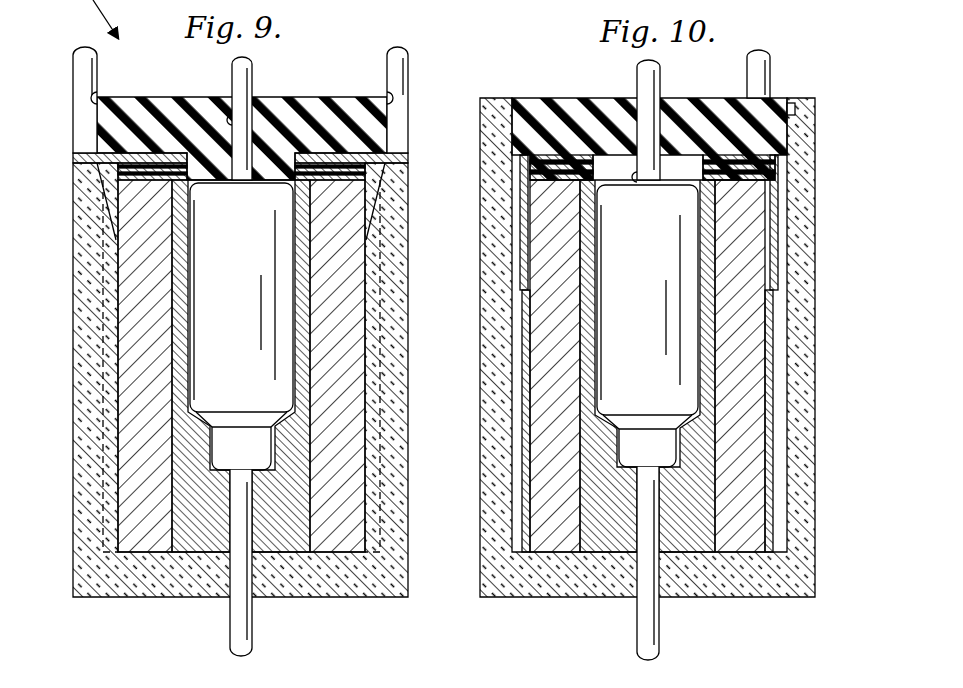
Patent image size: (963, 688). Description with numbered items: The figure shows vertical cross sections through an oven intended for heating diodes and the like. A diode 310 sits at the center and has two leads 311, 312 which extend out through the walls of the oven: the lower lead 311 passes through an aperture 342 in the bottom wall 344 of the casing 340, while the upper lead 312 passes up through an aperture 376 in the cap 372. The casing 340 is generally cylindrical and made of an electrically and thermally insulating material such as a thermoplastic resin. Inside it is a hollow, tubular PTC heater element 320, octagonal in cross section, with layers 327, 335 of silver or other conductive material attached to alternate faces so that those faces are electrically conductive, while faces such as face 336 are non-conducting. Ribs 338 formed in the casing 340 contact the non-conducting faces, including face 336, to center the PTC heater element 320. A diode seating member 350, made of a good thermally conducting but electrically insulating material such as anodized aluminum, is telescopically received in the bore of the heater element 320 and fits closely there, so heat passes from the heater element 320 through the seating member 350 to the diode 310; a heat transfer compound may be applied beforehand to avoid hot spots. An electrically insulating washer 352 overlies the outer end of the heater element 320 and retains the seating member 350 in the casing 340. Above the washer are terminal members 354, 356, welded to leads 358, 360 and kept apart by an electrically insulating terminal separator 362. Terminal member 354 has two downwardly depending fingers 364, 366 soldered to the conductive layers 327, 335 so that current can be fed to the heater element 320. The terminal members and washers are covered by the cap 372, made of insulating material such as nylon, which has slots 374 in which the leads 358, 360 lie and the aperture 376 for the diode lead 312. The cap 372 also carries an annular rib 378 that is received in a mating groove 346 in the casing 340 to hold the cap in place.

In FIG. 9, the diode 310 is at (258, 258).
In FIG. 10, the diode 310 is at (666, 259).
In FIG. 9, the lead 311 is at (252, 650).
In FIG. 10, the lead 311 is at (660, 640).
In FIG. 9, the lead 312 is at (252, 62).
In FIG. 10, the lead 312 is at (660, 68).
In FIG. 9, the PTC heater element 320 is at (160, 514).
In FIG. 10, the PTC heater element 320 is at (575, 514).
In FIG. 10, the layer 327 is at (525, 378).
In FIG. 10, the layer 335 is at (767, 377).
In FIG. 9, the rectangular face 336 is at (521, 7).
In FIG. 9, the ribs 338 is at (120, 318).
In FIG. 9, the casing 340 is at (85, 481).
In FIG. 10, the casing 340 is at (488, 479).
In FIG. 9, the aperture 342 is at (236, 598).
In FIG. 10, the aperture 342 is at (641, 598).
In FIG. 9, the bottom wall 344 is at (318, 596).
In FIG. 10, the bottom wall 344 is at (752, 596).
In FIG. 10, the groove 346 is at (790, 105).
In FIG. 9, the diode seating member 350 is at (305, 514).
In FIG. 10, the diode seating member 350 is at (708, 505).
In FIG. 9, the electrically insulating washer 352 is at (155, 180).
In FIG. 10, the electrically insulating washer 352 is at (652, 182).
In FIG. 9, the terminal member 354 is at (85, 160).
In FIG. 10, the terminal member 354 is at (803, 140).
In FIG. 9, the terminal member 356 is at (395, 160).
In FIG. 10, the terminal member 356 is at (530, 170).
In FIG. 9, the lead 358 is at (82, 75).
In FIG. 9, the lead 360 is at (408, 68).
In FIG. 10, the lead 360 is at (756, 50).
In FIG. 9, the terminal separator 362 is at (150, 160).
In FIG. 10, the terminal separator 362 is at (545, 160).
In FIG. 10, the finger 364 is at (520, 228).
In FIG. 10, the finger 366 is at (778, 236).
In FIG. 9, the cap 372 is at (197, 97).
In FIG. 10, the cap 372 is at (595, 100).
In FIG. 9, the slots 374 is at (97, 97).
In FIG. 9, the aperture 376 is at (252, 122).
In FIG. 10, the aperture 376 is at (646, 193).
In FIG. 10, the annular rib 378 is at (800, 112).